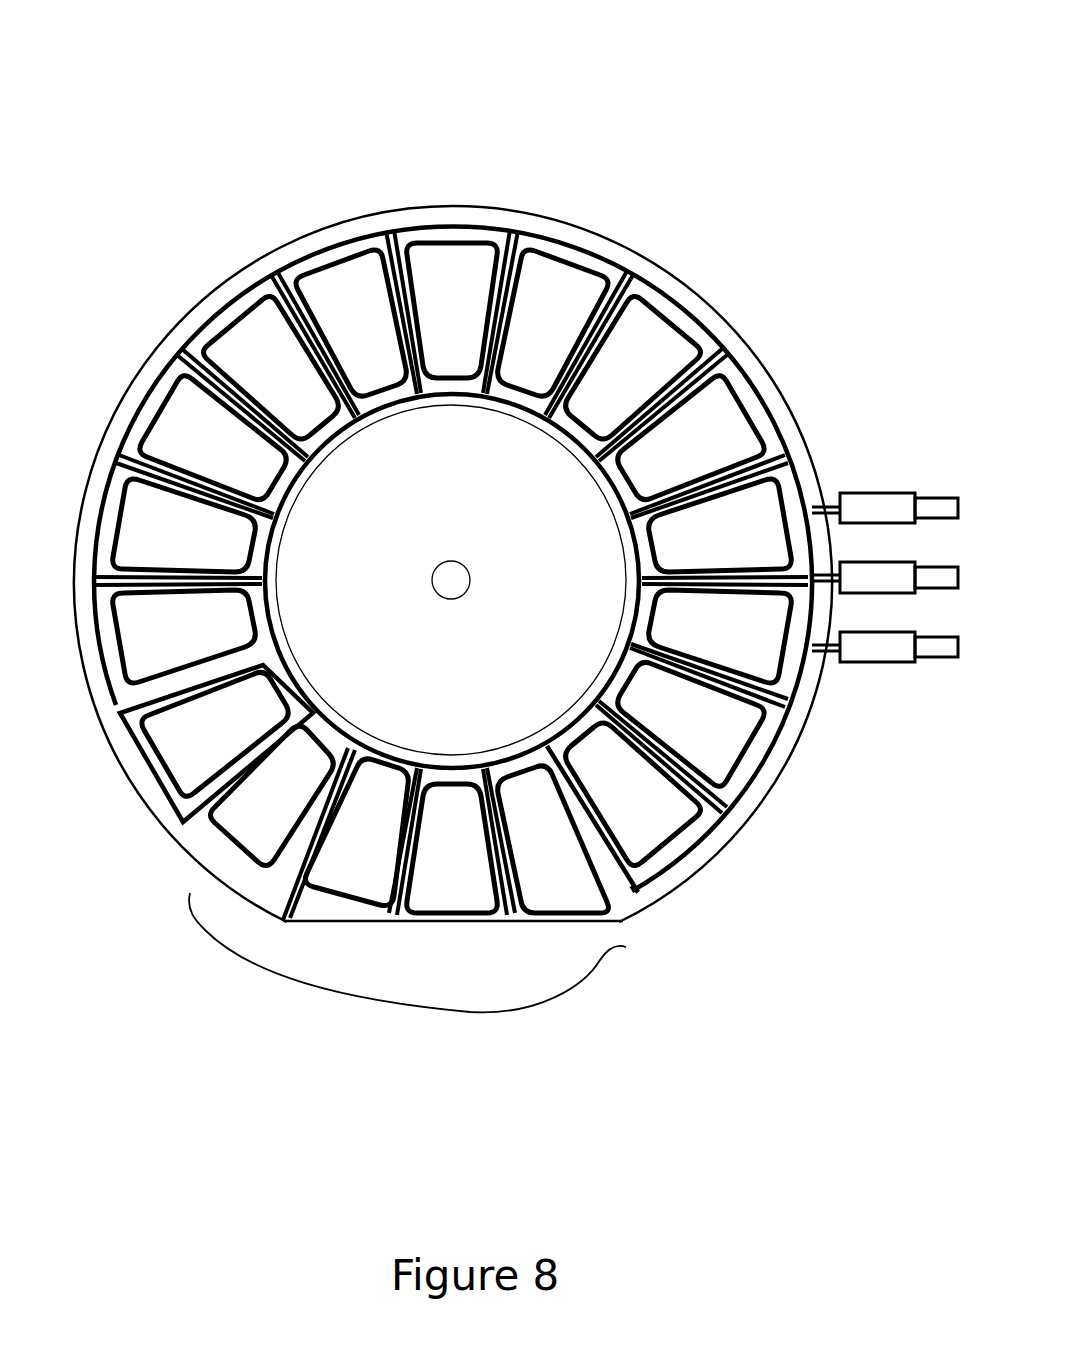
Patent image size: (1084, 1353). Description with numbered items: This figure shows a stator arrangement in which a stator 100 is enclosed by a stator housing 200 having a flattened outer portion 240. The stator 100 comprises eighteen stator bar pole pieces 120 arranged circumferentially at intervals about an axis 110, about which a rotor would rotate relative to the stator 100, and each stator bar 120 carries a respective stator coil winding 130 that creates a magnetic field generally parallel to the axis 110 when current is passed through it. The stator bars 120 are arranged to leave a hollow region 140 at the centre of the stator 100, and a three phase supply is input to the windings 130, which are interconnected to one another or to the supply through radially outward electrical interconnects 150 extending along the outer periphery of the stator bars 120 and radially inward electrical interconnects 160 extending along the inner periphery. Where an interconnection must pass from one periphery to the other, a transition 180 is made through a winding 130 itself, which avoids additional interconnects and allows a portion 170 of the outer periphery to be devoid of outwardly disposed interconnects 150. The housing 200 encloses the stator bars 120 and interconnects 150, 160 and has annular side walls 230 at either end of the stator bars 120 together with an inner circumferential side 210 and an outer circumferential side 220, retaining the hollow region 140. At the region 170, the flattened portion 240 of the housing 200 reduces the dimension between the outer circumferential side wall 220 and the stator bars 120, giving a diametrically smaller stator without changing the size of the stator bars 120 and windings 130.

The stator 100 is at (227, 248).
The axis 110 is at (437, 565).
The stator bar pole piece 120 is at (545, 277).
The stator coil winding 130 is at (442, 247).
The hollow region 140 is at (333, 544).
The radially outward electrical interconnect 150 is at (657, 285).
The radially inward electrical interconnect 160 is at (292, 675).
The portion of the outer periphery devoid of outwardly disposed electrical interconn 170 is at (400, 1003).
The transition 180 is at (635, 868).
The stator housing 200 is at (410, 205).
The inner circumferential side 210 is at (588, 495).
The outer circumferential side 220 is at (148, 812).
The annular side wall 230 is at (622, 900).
The flattened outer portion 240 is at (515, 923).